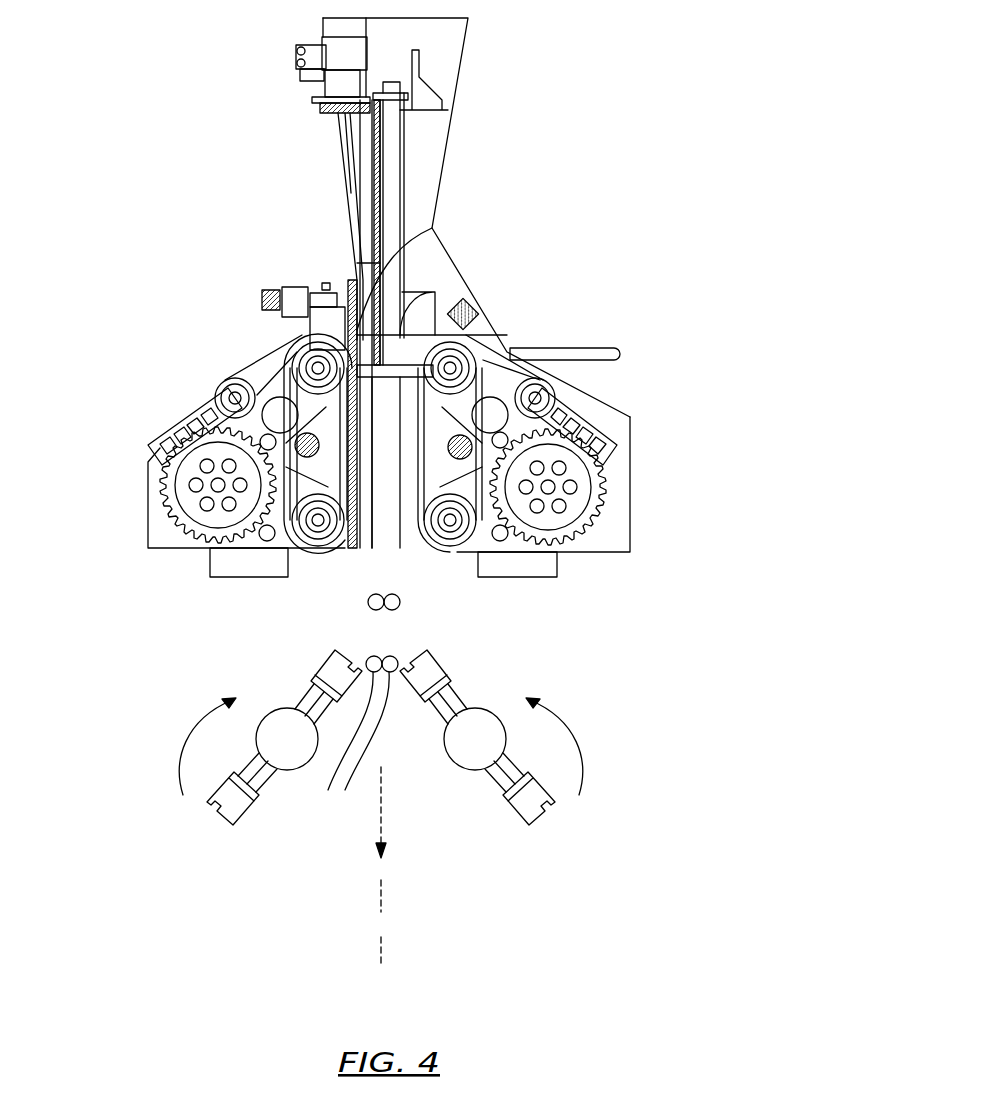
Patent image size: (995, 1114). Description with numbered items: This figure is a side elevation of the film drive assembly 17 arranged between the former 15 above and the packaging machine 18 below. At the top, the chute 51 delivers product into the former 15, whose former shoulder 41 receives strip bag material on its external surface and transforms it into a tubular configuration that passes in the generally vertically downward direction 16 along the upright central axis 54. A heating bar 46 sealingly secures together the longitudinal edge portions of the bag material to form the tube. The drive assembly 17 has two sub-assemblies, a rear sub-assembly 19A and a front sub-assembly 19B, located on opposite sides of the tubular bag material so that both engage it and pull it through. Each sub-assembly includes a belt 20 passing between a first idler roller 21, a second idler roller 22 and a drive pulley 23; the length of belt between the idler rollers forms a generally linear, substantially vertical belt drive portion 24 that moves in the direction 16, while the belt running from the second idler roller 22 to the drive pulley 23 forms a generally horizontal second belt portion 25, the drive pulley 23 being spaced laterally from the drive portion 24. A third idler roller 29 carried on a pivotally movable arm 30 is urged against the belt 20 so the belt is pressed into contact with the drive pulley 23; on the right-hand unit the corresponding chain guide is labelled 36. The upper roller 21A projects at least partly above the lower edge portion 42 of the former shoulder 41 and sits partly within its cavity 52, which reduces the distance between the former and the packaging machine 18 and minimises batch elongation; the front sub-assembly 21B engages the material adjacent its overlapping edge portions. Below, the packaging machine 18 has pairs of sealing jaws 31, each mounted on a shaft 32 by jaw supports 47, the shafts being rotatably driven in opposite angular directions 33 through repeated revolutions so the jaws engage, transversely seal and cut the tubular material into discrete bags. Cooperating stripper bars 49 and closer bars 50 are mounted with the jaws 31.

The former 15 is at (527, 223).
The direction 16 is at (387, 807).
The film drive assembly 17 is at (155, 597).
The packaging machine 18 is at (237, 890).
The rear sub-assembly 19A is at (593, 337).
The front sub-assembly 19B is at (175, 377).
The belt 20 is at (165, 527).
The first idler roller 21 is at (540, 372).
The upper roller 21A is at (473, 327).
The front sub-assembly 21B is at (287, 365).
The second idler roller 22 is at (327, 553).
The drive pulley 23 is at (587, 493).
The belt drive portion 24 is at (370, 457).
The second belt portion 25 is at (263, 557).
The third idler roller 29 is at (200, 380).
The pivotally movable arm 30 is at (170, 437).
The sealing jaws 31 is at (337, 660).
The shaft 32 is at (381, 739).
The angular directions 33 is at (183, 753).
The chain guide 36 is at (607, 428).
The former shoulder 41 is at (450, 292).
The lower edge portion 42 is at (512, 345).
The heating bar 46 is at (399, 558).
The jaw supports 47 is at (303, 700).
The stripper bars 49 is at (351, 749).
The closer bars 50 is at (369, 193).
The chute 51 is at (452, 143).
The cavity 52 is at (427, 282).
The axis 54 is at (380, 938).